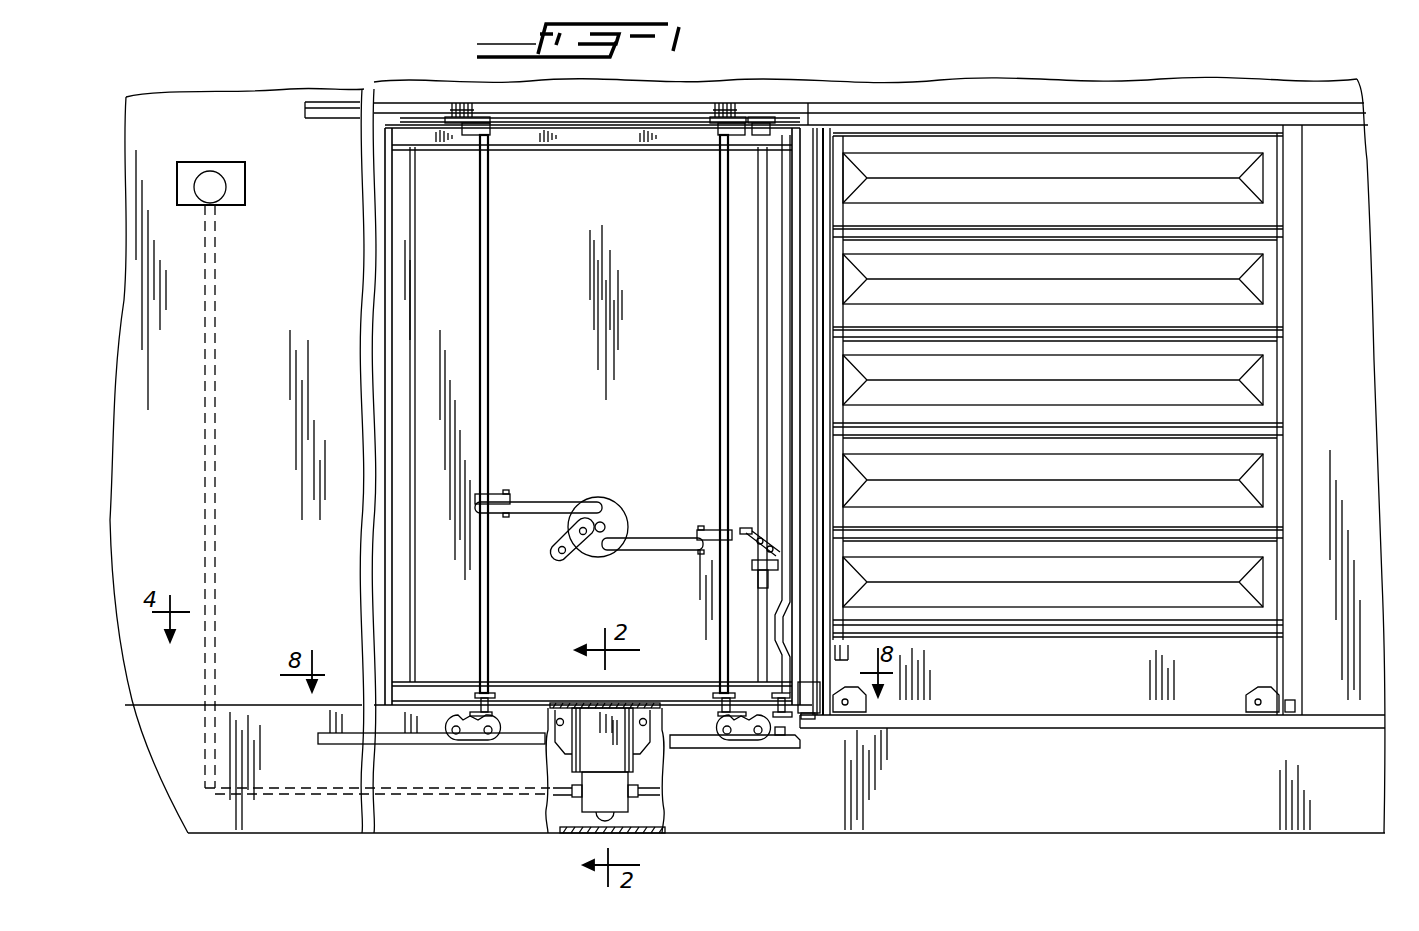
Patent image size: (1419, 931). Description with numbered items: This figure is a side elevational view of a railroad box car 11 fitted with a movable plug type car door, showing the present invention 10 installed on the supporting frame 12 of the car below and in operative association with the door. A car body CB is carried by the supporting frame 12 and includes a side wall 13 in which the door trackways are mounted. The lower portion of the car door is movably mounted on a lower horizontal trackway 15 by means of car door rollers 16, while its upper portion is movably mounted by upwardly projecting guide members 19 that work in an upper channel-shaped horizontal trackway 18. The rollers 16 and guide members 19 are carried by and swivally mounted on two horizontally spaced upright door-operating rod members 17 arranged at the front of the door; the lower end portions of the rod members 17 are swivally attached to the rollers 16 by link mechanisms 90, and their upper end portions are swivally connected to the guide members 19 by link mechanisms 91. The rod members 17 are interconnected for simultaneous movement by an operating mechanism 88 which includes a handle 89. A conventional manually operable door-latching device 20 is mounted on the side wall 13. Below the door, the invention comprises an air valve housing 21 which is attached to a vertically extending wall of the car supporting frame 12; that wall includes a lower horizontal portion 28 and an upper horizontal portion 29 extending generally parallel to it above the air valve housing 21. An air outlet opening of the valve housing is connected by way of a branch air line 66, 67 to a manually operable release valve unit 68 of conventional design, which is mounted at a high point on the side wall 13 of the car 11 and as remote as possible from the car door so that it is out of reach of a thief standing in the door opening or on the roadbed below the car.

The present invention 10 is at (618, 806).
The railroad box car 11 is at (1105, 728).
The supporting frame 12 is at (658, 770).
The side wall 13 is at (1130, 702).
The lower horizontal trackway 15 is at (486, 744).
The car door rollers 16 is at (452, 740).
The door-operating rod members 17 is at (492, 442).
The upper channel-shaped horizontal trackway 18 is at (580, 120).
The guide members 19 is at (470, 128).
The door-latching device 20 is at (755, 546).
The air valve housing 21 is at (598, 744).
The lower horizontal portion 28 is at (668, 826).
The upper horizontal portion 29 is at (618, 712).
The branch air line 66 is at (268, 786).
The branch air line 67 is at (218, 432).
The release valve unit 68 is at (216, 186).
The operating mechanism 88 is at (626, 530).
The handle 89 is at (556, 560).
The link mechanisms 90 is at (496, 694).
The link mechanisms 91 is at (487, 134).
The car body CB is at (146, 580).